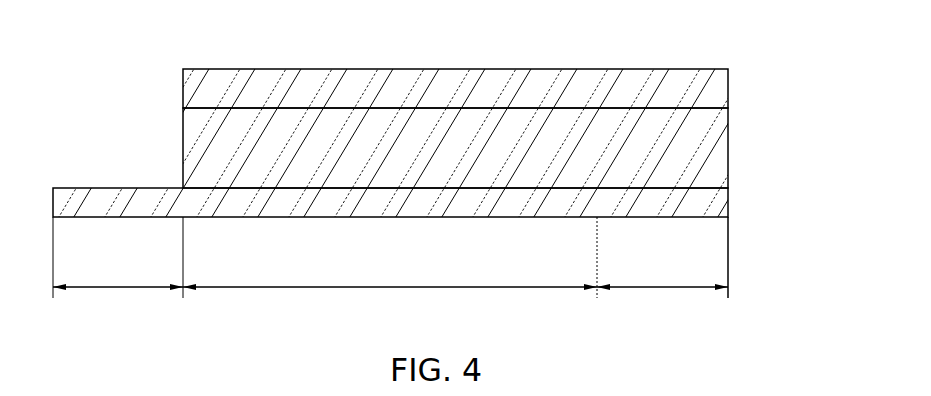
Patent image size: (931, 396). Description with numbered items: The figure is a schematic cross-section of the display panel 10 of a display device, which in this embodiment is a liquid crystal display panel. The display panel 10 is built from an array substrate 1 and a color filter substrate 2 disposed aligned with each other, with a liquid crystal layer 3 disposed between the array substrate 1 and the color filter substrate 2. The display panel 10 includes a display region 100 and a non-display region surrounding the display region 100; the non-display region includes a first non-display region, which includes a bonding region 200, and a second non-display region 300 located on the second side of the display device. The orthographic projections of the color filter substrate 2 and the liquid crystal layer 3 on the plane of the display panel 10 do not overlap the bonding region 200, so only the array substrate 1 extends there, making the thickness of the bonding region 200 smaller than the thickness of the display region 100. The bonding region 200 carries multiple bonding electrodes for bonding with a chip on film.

The display panel 10 is at (115, 40).
The array substrate 1 is at (728, 203).
The color filter substrate 2 is at (728, 89).
The liquid crystal layer 3 is at (728, 148).
The display region 100 is at (390, 304).
The bonding region 200 is at (118, 304).
The second non-display region 300 is at (662, 304).